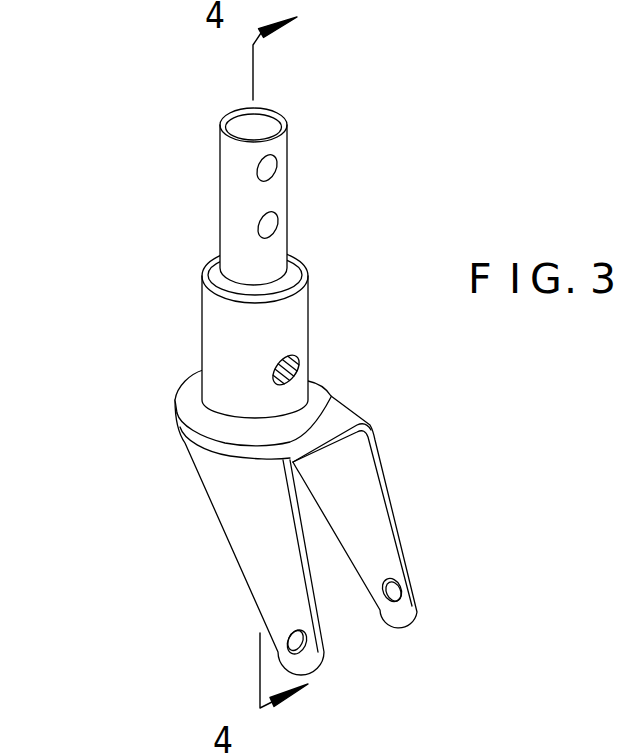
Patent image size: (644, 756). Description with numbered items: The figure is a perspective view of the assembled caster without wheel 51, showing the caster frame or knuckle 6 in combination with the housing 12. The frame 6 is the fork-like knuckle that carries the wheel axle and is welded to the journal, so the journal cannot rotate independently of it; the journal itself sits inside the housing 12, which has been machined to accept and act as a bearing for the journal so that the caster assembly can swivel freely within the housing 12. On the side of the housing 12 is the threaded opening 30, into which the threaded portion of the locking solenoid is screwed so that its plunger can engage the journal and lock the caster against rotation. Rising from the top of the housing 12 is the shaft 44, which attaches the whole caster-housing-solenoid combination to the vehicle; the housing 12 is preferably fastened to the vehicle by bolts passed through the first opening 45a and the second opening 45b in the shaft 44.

The frame or knuckle 6 is at (390, 480).
The housing 12 is at (308, 299).
The threaded opening in housing to receive solenoid 30 is at (297, 363).
The shaft for attachment of caster-housing-solenoid combination to vehicle 44 is at (289, 188).
The first opening for bolting shaft to vehicle 45a is at (258, 166).
The second opening for bolting shaft to vehicle 45b is at (258, 227).
The assembled caster without wheel 51 is at (150, 332).